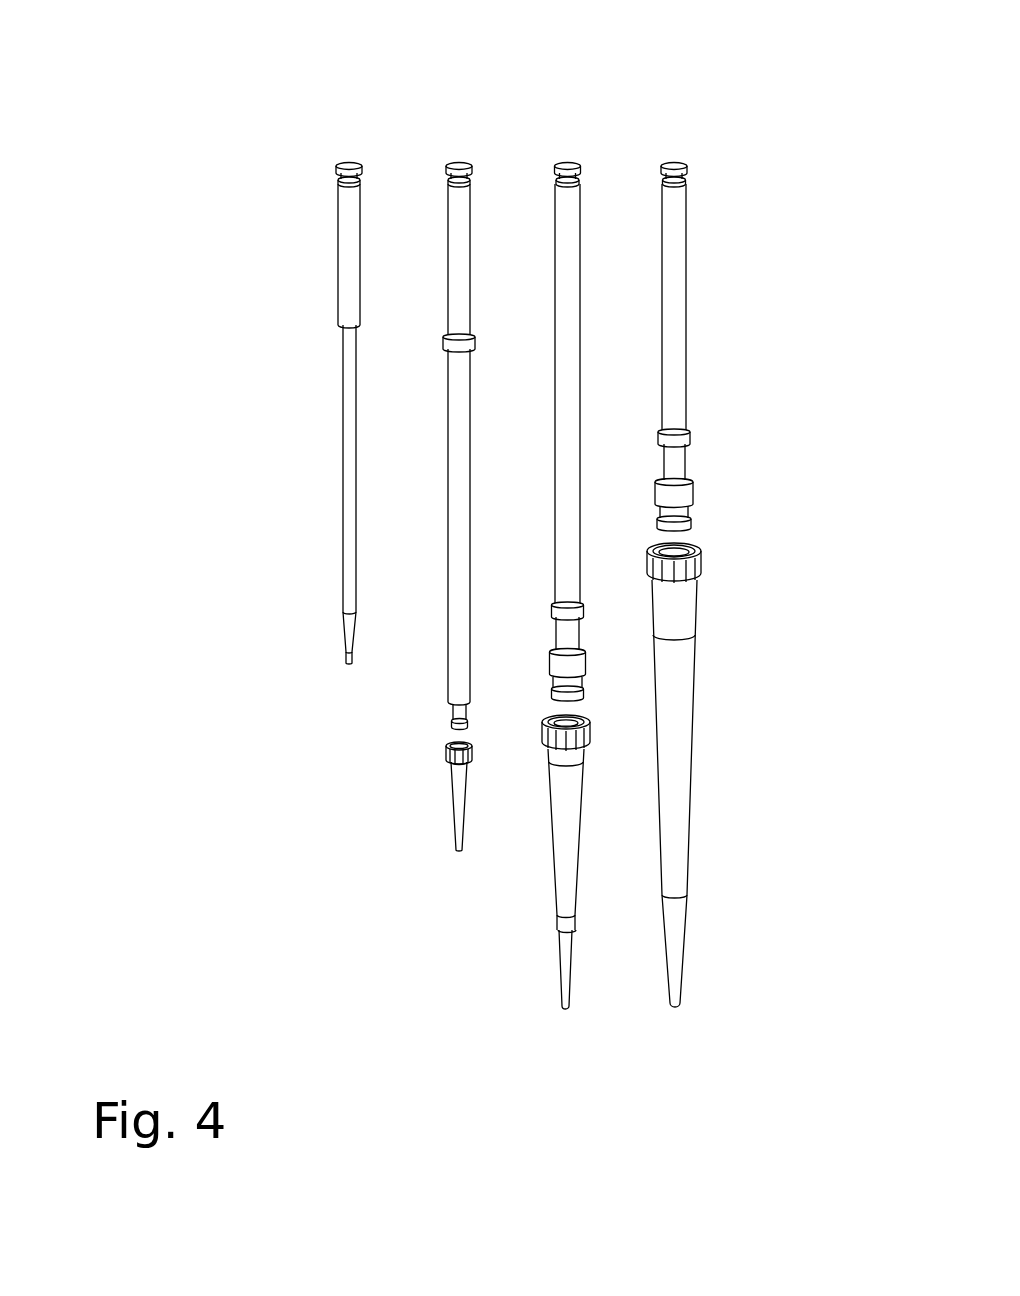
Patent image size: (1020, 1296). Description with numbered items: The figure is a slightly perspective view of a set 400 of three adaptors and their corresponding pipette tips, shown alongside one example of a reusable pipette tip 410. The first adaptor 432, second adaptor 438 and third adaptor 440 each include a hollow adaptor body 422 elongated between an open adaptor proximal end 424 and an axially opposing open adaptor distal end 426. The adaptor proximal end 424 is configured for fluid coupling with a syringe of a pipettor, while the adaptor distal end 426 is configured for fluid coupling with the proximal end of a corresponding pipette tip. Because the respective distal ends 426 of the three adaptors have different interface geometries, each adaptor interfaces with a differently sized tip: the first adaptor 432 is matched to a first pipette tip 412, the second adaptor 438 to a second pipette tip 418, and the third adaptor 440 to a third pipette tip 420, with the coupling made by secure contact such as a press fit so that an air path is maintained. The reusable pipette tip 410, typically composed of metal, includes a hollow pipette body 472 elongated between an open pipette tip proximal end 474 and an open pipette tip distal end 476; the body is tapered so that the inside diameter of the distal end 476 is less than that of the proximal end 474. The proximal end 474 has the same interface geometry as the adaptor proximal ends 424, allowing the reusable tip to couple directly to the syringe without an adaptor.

The set 400 is at (120, 136).
The reusable pipette tip 410 is at (295, 518).
The pipette tip proximal end 474 is at (337, 165).
The pipette body 472 is at (337, 345).
The pipette tip distal end 476 is at (348, 658).
The first adaptor 432 is at (425, 172).
The first pipette tip 412 is at (422, 849).
The second adaptor 438 is at (537, 179).
The second pipette tip 418 is at (518, 1009).
The third adaptor 440 is at (647, 185).
The adaptor proximal end 424 is at (677, 165).
The adaptor body 422 is at (688, 345).
The adaptor distal end 426 is at (690, 518).
The third pipette tip 420 is at (642, 1028).